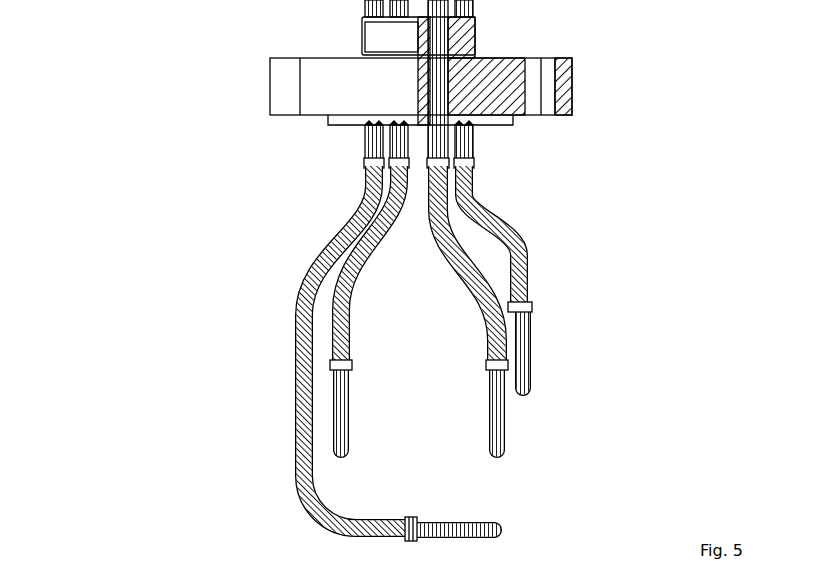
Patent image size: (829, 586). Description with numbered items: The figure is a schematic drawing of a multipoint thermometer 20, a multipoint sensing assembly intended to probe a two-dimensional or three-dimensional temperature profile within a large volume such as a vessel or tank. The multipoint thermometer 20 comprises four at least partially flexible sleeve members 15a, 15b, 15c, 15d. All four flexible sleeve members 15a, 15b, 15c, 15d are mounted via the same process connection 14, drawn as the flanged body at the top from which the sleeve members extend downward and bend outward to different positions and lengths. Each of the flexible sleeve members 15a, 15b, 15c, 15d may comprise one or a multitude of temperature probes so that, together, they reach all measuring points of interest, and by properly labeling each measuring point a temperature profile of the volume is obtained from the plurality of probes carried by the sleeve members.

The multipoint thermometer 20 is at (15, 22).
The process connection 14 is at (549, 47).
The flexible sleeve member 15a is at (280, 332).
The flexible sleeve member 15b is at (357, 337).
The flexible sleeve member 15c is at (480, 330).
The flexible sleeve member 15d is at (505, 202).